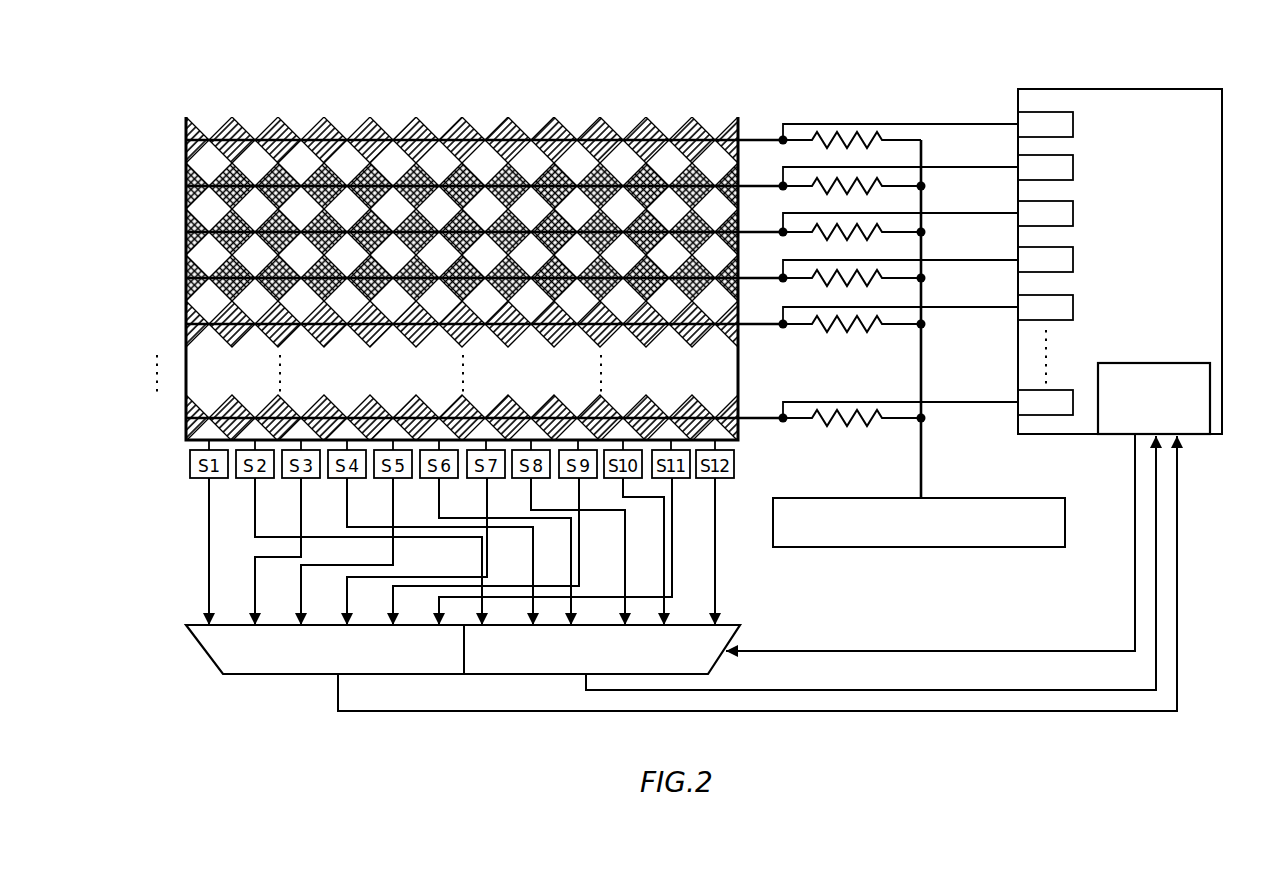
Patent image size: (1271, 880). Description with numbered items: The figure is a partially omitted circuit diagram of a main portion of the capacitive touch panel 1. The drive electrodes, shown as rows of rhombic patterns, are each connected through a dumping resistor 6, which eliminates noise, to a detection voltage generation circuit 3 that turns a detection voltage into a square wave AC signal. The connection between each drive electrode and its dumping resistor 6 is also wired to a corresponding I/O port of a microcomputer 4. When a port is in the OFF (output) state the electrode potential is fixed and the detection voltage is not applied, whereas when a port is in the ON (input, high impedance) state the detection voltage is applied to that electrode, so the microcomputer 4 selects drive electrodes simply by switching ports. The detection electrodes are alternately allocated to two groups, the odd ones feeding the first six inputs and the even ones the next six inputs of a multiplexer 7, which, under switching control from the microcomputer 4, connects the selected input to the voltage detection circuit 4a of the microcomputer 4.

The capacitive touch panel 1 is at (945, 85).
The detection voltage generation circuit 3 is at (1031, 537).
The microcomputer 4 is at (1147, 330).
The voltage detection circuit 4a is at (1203, 436).
The dumping resistor 6 is at (836, 138).
The multiplexer 7 is at (221, 677).